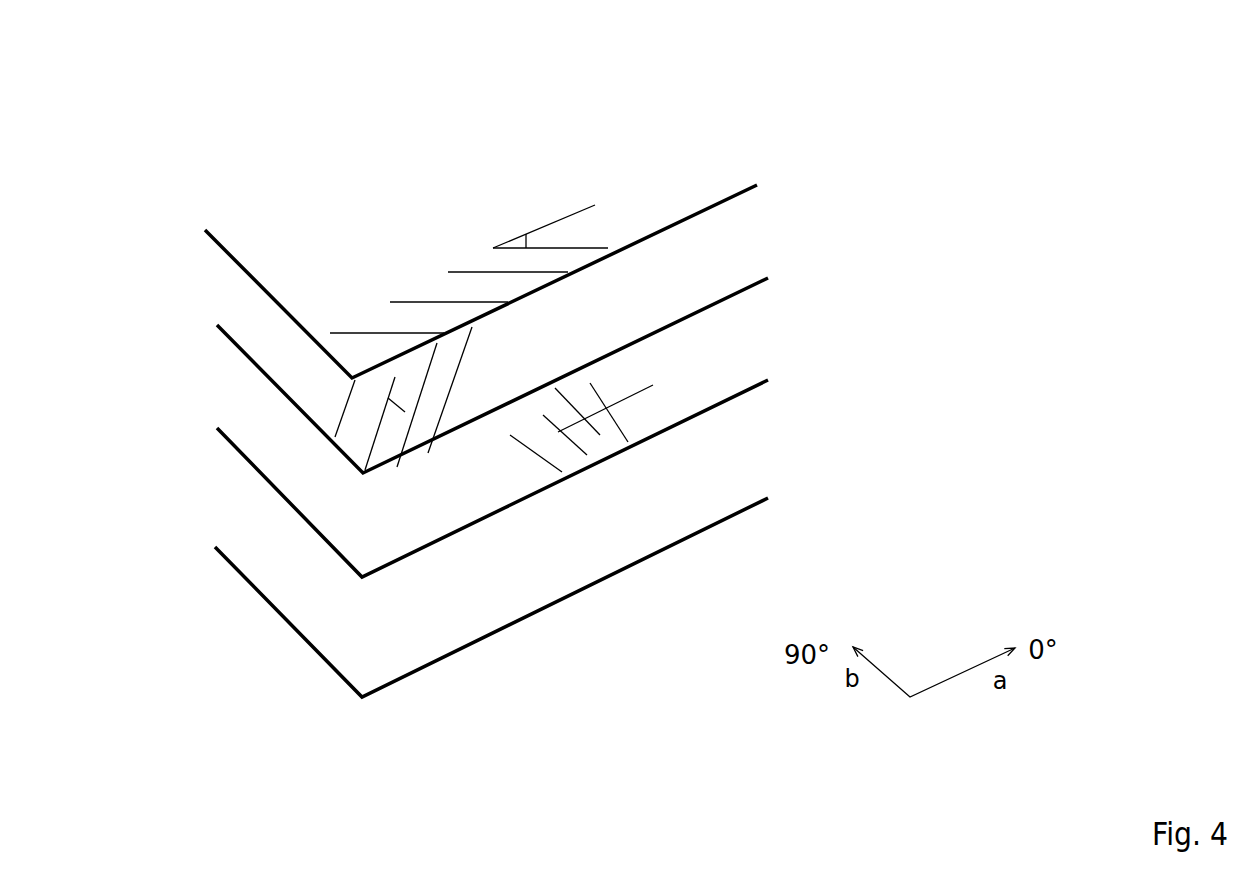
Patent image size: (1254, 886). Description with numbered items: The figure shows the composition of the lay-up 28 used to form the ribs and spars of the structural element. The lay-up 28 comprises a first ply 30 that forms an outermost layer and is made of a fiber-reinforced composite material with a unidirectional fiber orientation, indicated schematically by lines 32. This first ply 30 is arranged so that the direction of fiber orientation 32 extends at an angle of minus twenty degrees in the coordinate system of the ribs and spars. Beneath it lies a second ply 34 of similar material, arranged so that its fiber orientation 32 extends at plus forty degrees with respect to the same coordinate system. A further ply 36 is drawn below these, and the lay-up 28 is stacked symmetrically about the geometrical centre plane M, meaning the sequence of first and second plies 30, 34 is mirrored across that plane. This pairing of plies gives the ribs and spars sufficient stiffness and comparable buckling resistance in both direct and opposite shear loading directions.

The lay-up 28 is at (692, 85).
The first ply 30 is at (753, 165).
The fiber orientation 32 is at (452, 272).
The second ply 34 is at (768, 265).
The third fiber layer 36 is at (758, 372).
The geometrical centre plane M is at (757, 488).